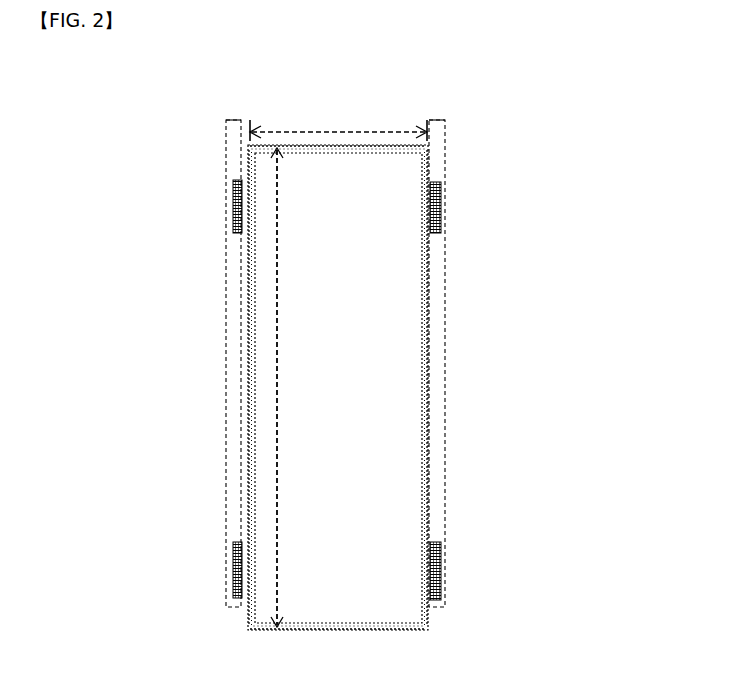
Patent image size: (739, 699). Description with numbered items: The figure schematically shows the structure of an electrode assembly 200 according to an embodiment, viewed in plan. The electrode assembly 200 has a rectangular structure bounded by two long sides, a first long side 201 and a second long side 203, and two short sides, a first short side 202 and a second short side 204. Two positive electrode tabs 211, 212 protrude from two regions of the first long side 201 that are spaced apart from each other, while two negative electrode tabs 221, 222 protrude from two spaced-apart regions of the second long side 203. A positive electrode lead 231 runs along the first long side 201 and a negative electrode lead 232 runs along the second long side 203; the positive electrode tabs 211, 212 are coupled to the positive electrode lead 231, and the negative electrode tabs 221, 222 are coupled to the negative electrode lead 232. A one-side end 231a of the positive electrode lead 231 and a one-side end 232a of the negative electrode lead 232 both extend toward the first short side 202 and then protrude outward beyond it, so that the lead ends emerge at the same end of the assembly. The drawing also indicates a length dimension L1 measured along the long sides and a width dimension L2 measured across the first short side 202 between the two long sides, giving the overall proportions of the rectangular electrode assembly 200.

The electrode assembly 200 is at (185, 107).
The first long side 201 is at (217, 363).
The first short side 202 is at (377, 108).
The second long side 203 is at (458, 364).
The second short side 204 is at (358, 645).
The positive electrode tab 211 is at (245, 200).
The positive electrode tab 212 is at (242, 562).
The negative electrode tab 221 is at (432, 200).
The negative electrode tab 222 is at (430, 562).
The positive electrode lead 231 is at (237, 280).
The one-side end of positive electrode lead 231a is at (234, 133).
The negative electrode lead 232 is at (438, 277).
The one-side end of negative electrode lead 232a is at (437, 133).
The length of frame L1 is at (277, 412).
The width of frame L2 is at (338, 123).